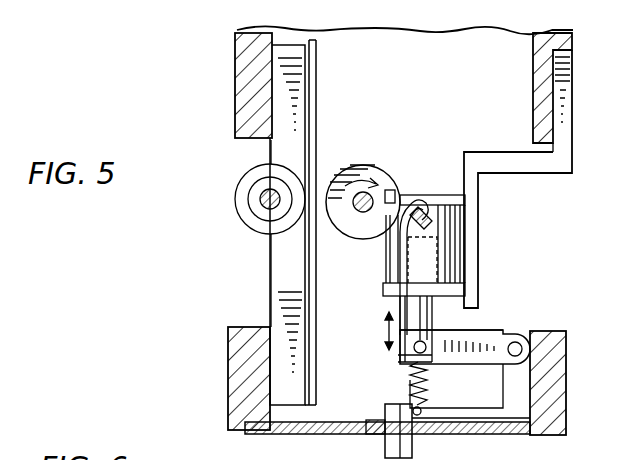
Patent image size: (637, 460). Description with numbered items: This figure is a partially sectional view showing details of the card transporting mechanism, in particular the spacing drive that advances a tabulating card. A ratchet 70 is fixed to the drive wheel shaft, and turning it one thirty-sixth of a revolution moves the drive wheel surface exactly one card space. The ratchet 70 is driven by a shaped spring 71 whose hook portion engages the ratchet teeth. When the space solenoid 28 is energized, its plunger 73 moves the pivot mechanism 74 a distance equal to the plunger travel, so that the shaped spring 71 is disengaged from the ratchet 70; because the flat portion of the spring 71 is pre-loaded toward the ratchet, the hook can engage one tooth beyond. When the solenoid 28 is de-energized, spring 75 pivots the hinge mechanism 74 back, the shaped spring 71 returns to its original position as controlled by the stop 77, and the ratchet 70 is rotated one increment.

The ratchet 70 is at (381, 167).
The space solenoid 28 is at (440, 196).
The stop 77 is at (424, 226).
The shaped spring 71 is at (392, 329).
The plunger 73 is at (452, 318).
The pivot mechanism 74 is at (484, 368).
The spring 75 is at (410, 380).